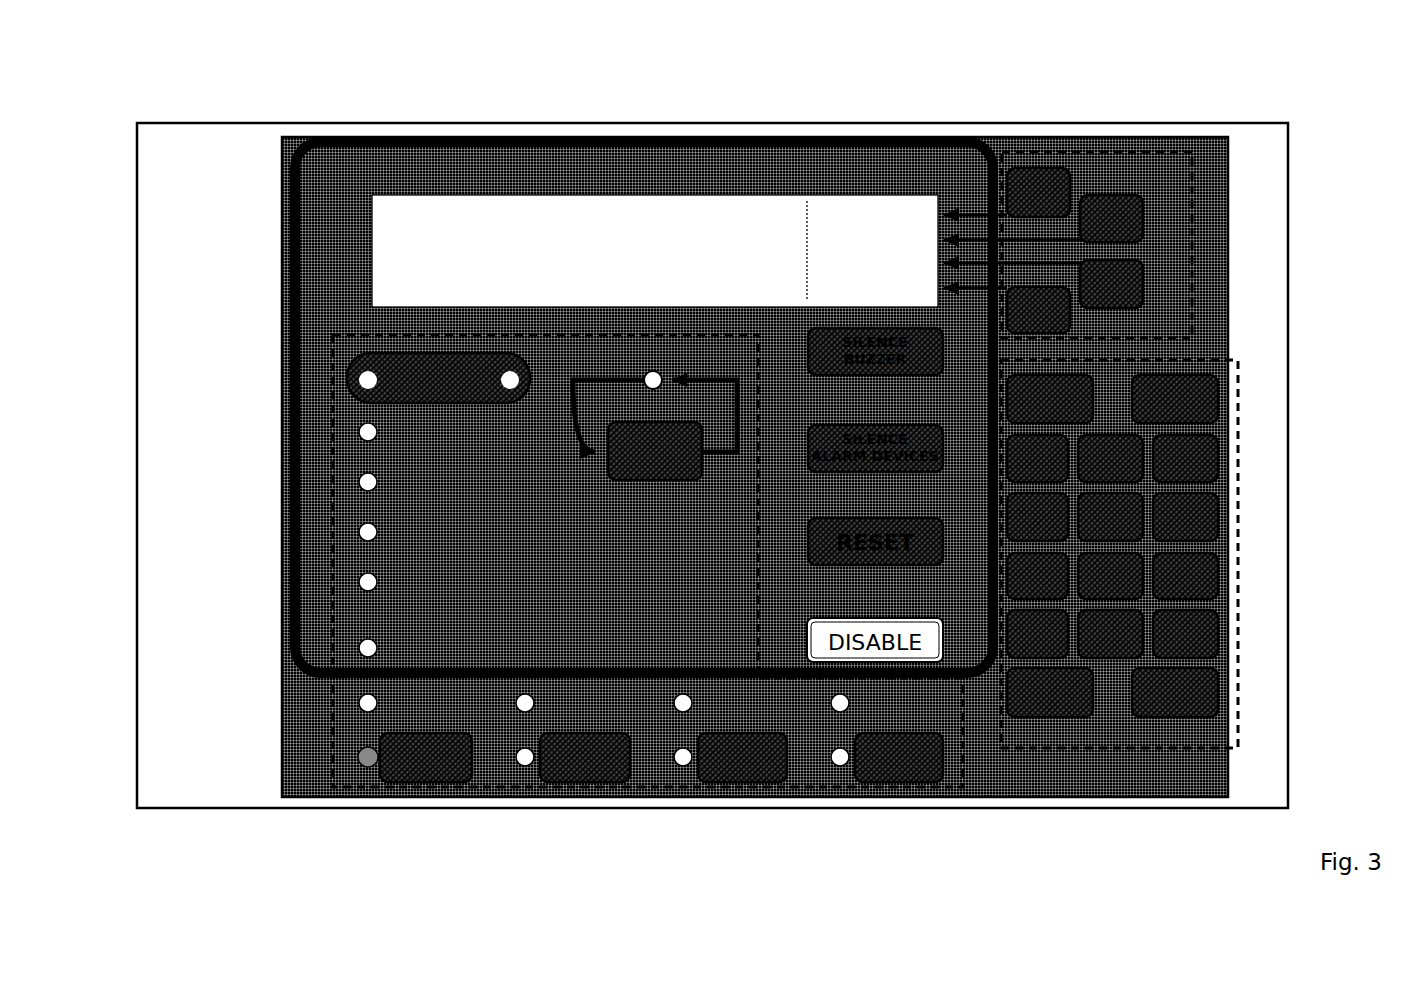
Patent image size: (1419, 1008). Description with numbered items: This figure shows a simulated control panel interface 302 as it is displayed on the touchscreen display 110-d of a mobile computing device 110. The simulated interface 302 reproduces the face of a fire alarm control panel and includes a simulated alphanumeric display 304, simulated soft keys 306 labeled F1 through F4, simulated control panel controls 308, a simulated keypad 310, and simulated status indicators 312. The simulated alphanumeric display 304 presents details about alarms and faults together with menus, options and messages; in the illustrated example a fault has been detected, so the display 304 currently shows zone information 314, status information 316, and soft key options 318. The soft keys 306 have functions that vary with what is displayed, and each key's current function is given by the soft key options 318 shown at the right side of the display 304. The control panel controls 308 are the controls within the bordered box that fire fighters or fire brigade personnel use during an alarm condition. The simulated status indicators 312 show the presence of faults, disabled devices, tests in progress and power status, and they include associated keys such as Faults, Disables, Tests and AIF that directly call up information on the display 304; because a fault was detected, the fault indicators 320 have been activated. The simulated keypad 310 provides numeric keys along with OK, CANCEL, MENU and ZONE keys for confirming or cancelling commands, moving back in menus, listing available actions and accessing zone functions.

The mobile computing device 110 is at (263, 123).
The touchscreen display 110-d is at (283, 326).
The simulated control panel interface 302 is at (322, 200).
The simulated alphanumeric display 304 is at (677, 232).
The simulated soft keys 306 is at (1167, 152).
The simulated control panel controls 308 is at (860, 146).
The simulated keypad 310 is at (1240, 577).
The simulated status indicators 312 is at (591, 561).
The zone information 314 is at (558, 215).
The status information 316 is at (458, 292).
The soft key options 318 is at (914, 194).
The fault indicators 320 is at (358, 754).